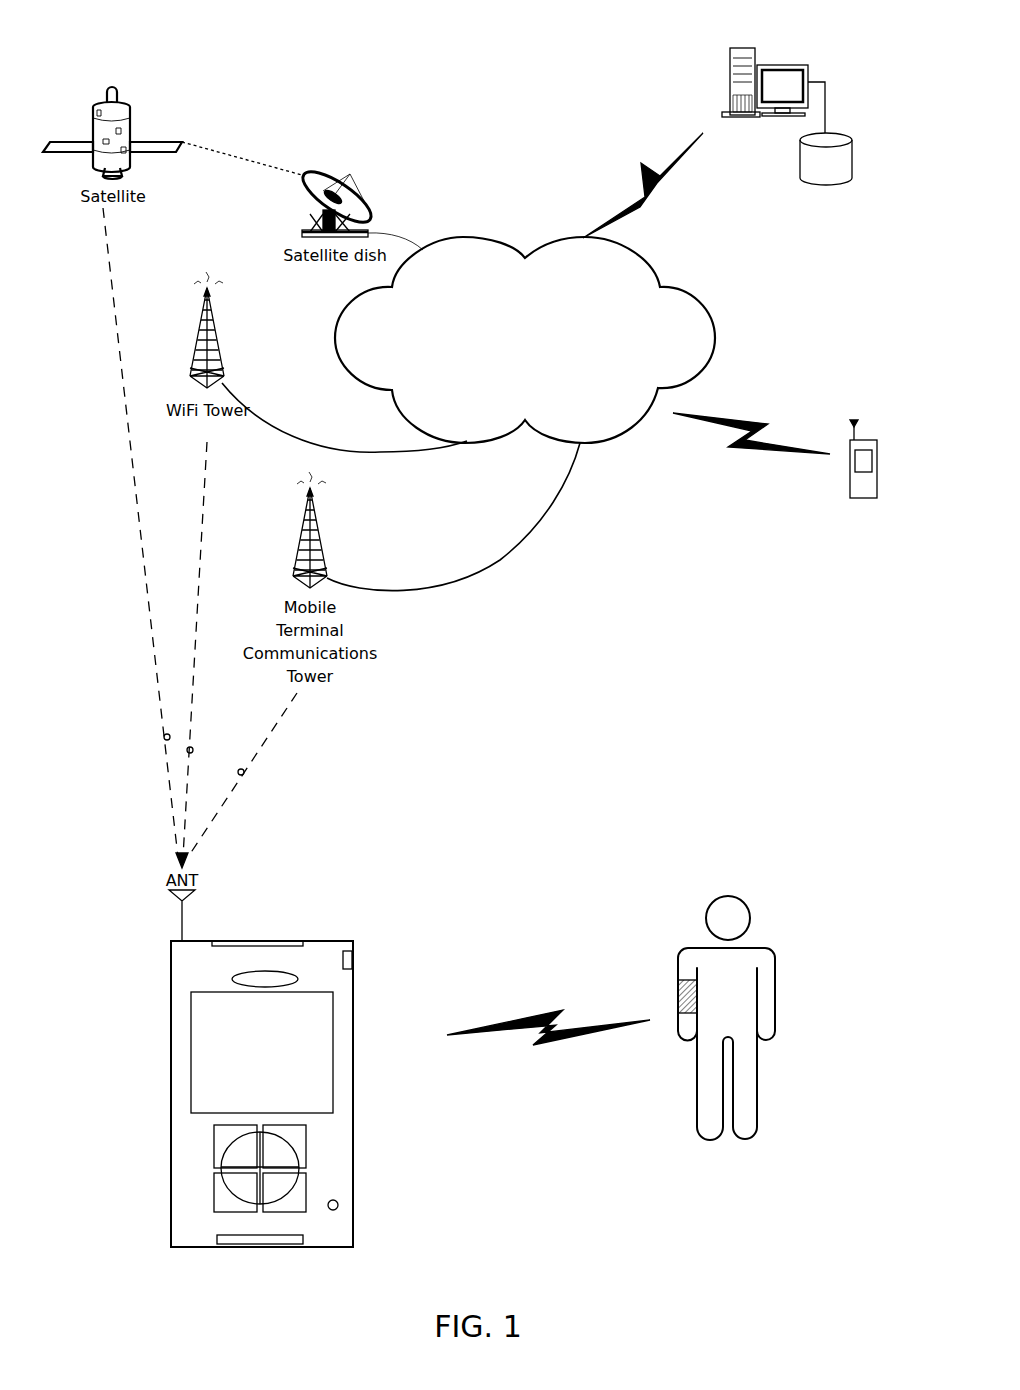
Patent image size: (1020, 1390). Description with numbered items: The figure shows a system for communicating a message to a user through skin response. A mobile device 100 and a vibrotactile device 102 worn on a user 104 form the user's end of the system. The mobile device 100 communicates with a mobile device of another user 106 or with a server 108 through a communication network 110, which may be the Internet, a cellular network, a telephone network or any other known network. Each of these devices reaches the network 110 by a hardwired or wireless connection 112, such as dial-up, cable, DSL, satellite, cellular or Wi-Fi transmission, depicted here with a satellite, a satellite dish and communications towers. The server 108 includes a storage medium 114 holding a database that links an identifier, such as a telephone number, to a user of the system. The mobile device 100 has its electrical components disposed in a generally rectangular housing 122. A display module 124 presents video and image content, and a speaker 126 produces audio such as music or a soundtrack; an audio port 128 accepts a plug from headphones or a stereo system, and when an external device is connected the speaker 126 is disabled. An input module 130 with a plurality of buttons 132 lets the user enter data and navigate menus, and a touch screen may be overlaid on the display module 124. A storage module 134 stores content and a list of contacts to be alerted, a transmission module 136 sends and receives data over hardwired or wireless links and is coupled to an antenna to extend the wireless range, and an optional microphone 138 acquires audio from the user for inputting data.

The mobile device 100 is at (269, 1081).
The vibrotactile device 102 is at (678, 997).
The user 104 is at (750, 912).
The mobile device of another user 106 is at (846, 476).
The server 108 is at (740, 47).
The communication network 110 is at (713, 339).
The hardwired or wireless connection 112 is at (652, 197).
The storage medium 114 is at (853, 161).
The housing 122 is at (171, 957).
The display module 124 is at (333, 1035).
The speaker 126 is at (265, 972).
The audio port 128 is at (355, 962).
The input module 130 is at (252, 1168).
The buttons 132 is at (213, 1192).
The storage module 134 is at (217, 1238).
The transmission module 136 is at (277, 941).
The microphone 138 is at (337, 1204).